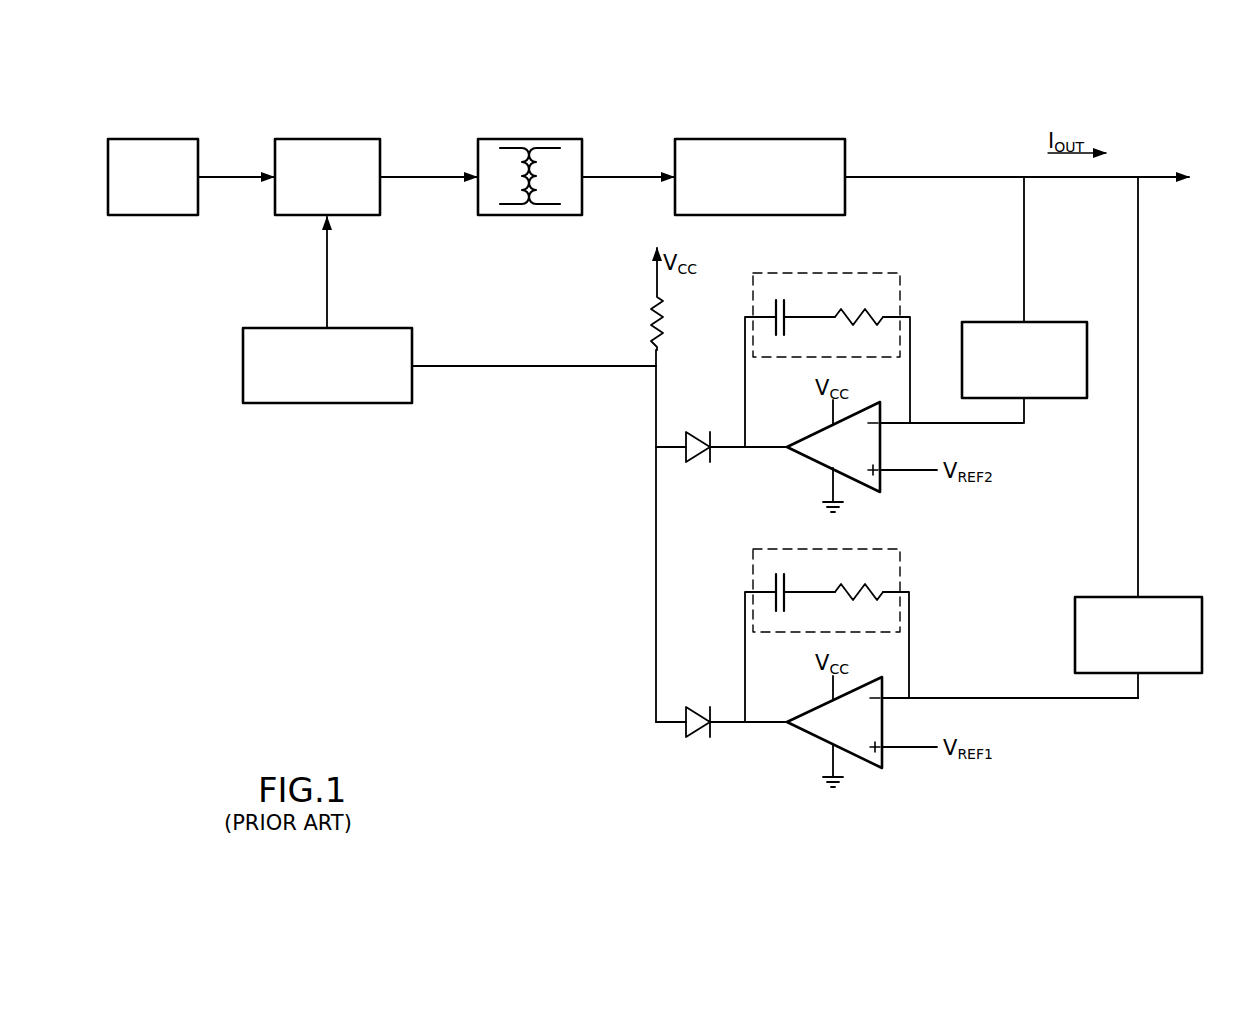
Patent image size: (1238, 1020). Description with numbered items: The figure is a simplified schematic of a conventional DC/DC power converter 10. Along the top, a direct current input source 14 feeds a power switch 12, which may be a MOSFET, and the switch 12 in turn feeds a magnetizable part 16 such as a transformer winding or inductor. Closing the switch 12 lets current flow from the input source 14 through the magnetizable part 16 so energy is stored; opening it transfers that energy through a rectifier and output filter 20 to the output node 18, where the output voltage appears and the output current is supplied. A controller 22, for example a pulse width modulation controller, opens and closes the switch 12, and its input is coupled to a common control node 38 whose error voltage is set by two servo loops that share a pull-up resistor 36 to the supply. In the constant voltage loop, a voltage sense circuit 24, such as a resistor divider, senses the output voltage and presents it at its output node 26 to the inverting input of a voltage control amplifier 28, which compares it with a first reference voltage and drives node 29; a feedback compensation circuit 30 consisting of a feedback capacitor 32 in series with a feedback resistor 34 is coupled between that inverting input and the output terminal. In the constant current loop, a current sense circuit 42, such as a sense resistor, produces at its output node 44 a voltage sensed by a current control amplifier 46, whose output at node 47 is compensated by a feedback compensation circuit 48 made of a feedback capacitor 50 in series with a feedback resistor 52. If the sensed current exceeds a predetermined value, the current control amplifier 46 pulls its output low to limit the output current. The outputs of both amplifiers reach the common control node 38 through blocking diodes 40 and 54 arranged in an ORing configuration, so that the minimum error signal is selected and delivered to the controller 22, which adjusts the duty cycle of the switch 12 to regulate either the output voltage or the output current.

The DC/DC power converter 10 is at (1100, 57).
The power switch 12 is at (322, 139).
The direct current input source 14 is at (145, 139).
The magnetizable part 16 is at (528, 139).
The output node 18 is at (1145, 175).
The rectifier and output filter 20 is at (768, 139).
The controller 22 is at (367, 328).
The voltage sense circuit 24 is at (1165, 597).
The output node of the voltage sense circuit 26 is at (1080, 700).
The voltage control amplifier 28 is at (812, 738).
The node 29 is at (752, 731).
The feedback compensation circuit 30 is at (830, 572).
The feedback capacitor 32 is at (772, 585).
The feedback resistor 34 is at (876, 600).
The pull-up resistor 36 is at (652, 325).
The common control node 38 is at (655, 388).
The blocking diode 40 is at (697, 705).
The current sense circuit 42 is at (1045, 322).
The output node of the current sense circuit 44 is at (1008, 425).
The current control amplifier 46 is at (812, 460).
The node 47 is at (752, 456).
The feedback compensation circuit 48 is at (820, 291).
The feedback capacitor 50 is at (772, 307).
The feedback resistor 52 is at (862, 315).
The blocking diode 54 is at (697, 430).